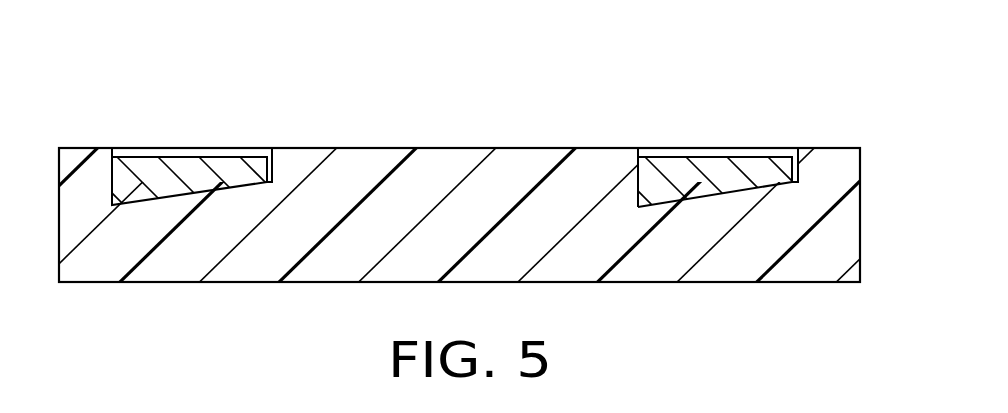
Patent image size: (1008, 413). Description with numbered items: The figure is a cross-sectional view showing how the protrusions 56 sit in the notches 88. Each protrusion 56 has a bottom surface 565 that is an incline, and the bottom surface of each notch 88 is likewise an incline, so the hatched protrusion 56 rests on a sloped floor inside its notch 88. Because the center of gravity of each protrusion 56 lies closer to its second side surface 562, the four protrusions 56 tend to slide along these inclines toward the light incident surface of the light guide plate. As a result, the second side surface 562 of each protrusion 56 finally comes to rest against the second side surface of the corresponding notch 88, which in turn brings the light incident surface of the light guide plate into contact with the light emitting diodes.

The protrusion 56 is at (758, 170).
The second side surface 562 is at (645, 172).
The bottom surface 565 is at (705, 201).
The notch 88 is at (497, 204).